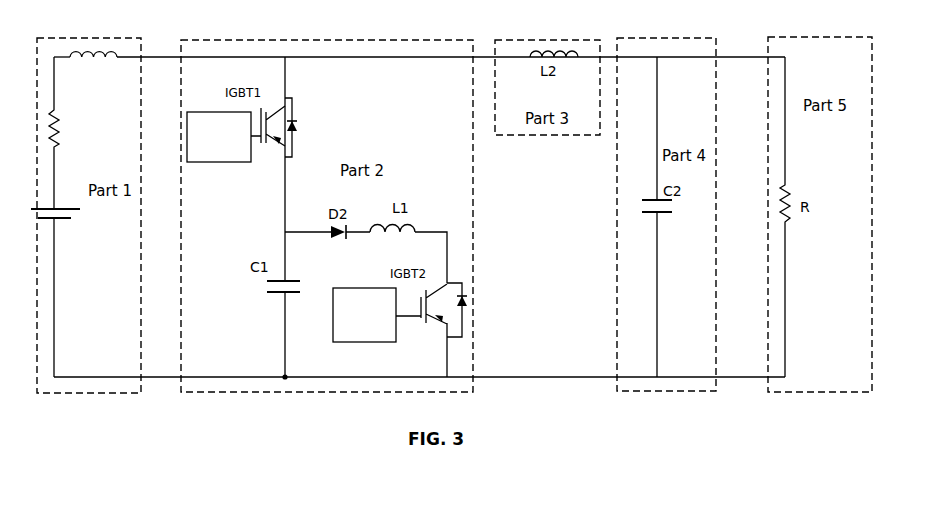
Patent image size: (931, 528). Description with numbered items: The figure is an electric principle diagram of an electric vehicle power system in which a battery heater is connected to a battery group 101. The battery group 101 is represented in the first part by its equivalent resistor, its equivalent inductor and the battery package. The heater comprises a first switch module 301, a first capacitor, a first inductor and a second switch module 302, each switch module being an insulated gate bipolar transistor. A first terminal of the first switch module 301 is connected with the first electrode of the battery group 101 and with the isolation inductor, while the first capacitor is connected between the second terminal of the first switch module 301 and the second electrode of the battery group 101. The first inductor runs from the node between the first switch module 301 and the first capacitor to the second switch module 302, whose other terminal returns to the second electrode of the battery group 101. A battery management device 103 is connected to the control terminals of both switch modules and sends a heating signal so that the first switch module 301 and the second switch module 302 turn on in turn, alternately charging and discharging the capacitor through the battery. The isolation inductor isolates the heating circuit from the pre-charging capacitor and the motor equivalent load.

The battery group 101 is at (74, 214).
The battery management device 103 is at (196, 163).
The first switch module 301 is at (302, 112).
The second switch module 302 is at (464, 314).